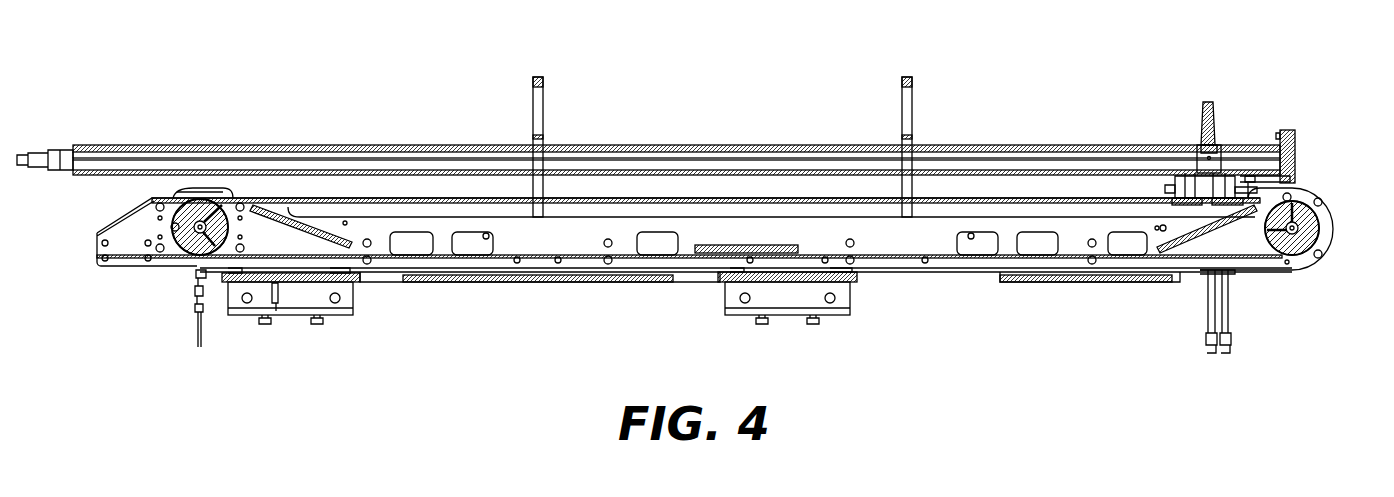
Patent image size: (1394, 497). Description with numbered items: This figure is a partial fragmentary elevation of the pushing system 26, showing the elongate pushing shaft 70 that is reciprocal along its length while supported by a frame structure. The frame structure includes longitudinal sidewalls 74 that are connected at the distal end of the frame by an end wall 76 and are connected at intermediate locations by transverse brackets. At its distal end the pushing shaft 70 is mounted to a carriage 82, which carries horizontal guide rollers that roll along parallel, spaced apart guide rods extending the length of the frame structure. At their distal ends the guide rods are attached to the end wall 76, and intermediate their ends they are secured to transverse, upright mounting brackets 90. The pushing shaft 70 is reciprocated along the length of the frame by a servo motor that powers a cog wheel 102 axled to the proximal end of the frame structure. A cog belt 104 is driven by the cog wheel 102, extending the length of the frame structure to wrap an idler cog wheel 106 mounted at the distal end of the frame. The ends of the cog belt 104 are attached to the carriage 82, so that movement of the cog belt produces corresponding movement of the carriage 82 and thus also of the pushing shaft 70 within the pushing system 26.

The pushing system 26 is at (882, 343).
The pushing shaft 70 is at (673, 160).
The longitudinal sidewalls 74 is at (908, 237).
The end wall 76 is at (1288, 130).
The carriage 82 is at (1187, 172).
The upright mounting brackets 90 is at (540, 77).
The cog wheel 102 is at (184, 237).
The cog belt 104 is at (295, 257).
The idler cog wheel 106 is at (1313, 222).